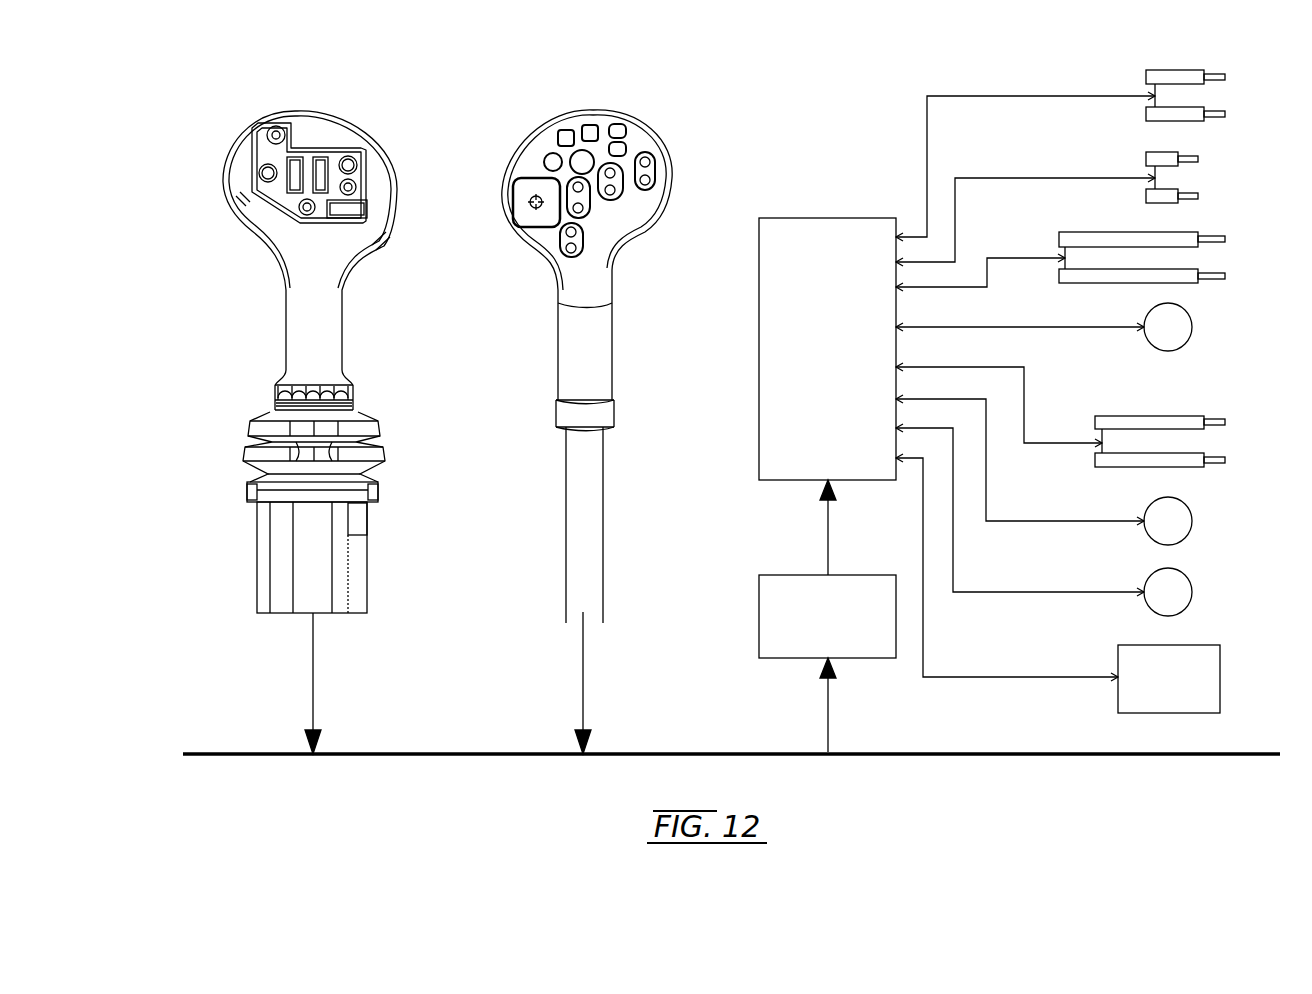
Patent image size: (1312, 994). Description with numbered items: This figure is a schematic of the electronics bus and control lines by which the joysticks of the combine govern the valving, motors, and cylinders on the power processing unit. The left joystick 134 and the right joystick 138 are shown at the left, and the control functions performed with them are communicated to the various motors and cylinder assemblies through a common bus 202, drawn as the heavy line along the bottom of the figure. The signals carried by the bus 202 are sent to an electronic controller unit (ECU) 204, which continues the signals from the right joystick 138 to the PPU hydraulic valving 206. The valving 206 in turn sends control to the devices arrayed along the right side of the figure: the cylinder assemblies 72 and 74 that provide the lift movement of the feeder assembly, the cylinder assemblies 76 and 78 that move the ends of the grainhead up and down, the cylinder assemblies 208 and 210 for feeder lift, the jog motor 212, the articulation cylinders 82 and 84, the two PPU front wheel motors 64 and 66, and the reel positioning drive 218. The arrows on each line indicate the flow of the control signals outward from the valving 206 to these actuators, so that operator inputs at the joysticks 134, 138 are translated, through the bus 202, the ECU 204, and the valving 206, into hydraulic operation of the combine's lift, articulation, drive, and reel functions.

The left joystick 134 is at (347, 124).
The right joystick 138 is at (648, 120).
The common bus 202 is at (440, 757).
The electronic controller unit (ECU) 204 is at (760, 603).
The PPU hydraulic valving 206 is at (759, 330).
The cylinder assembly 76 is at (1193, 78).
The cylinder assembly 78 is at (1193, 114).
The cylinder assembly 208 is at (1167, 160).
The cylinder assembly 210 is at (1167, 196).
The cylinder assembly 72 is at (1178, 240).
The cylinder assembly 74 is at (1178, 275).
The jog motor 212 is at (1192, 320).
The articulation cylinder 82 is at (1183, 423).
The articulation cylinder 84 is at (1183, 461).
The PPU front wheel motor 64 is at (1192, 521).
The PPU front wheel motor 66 is at (1192, 585).
The reel positioning drive 218 is at (1221, 667).